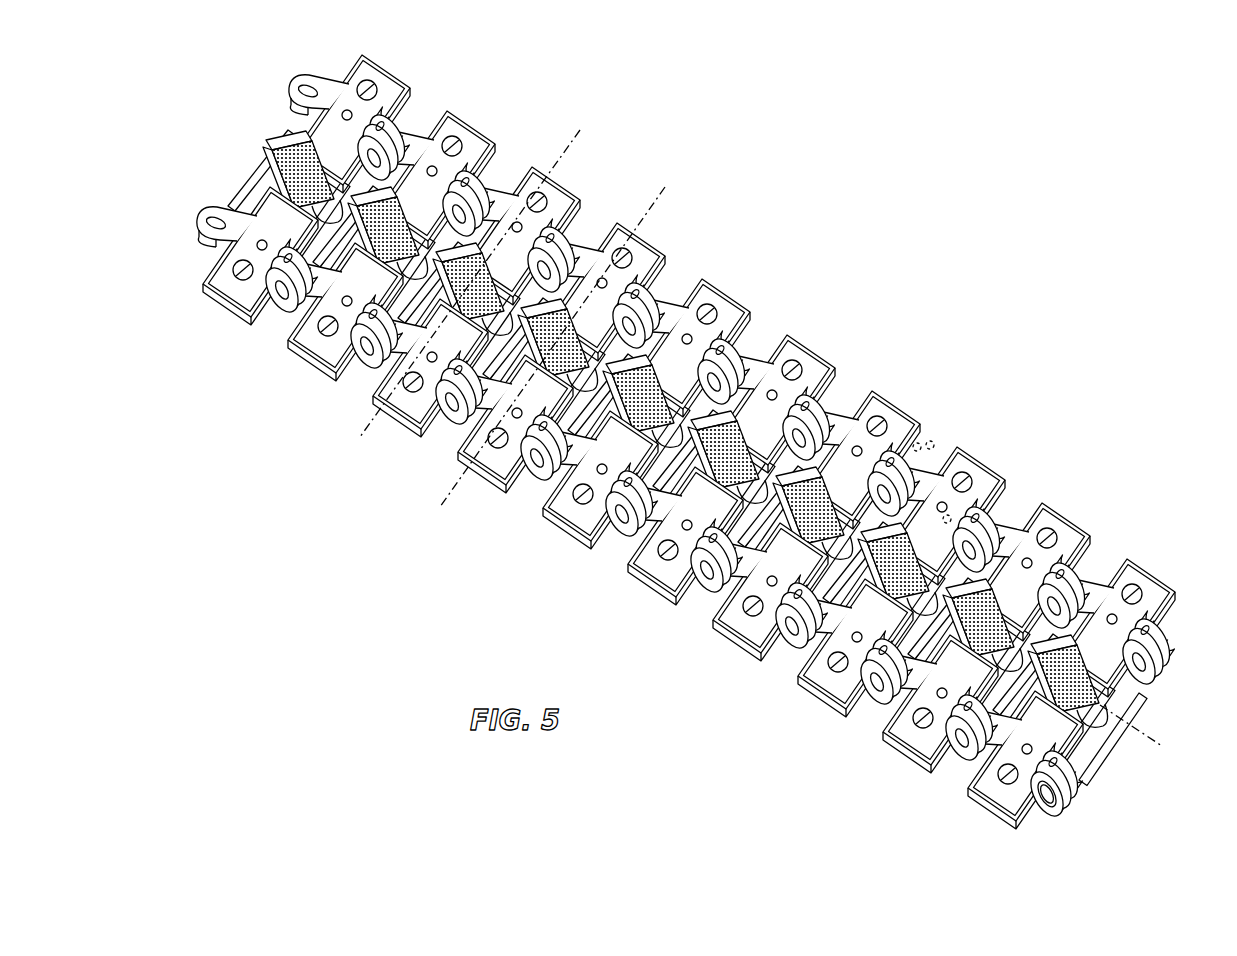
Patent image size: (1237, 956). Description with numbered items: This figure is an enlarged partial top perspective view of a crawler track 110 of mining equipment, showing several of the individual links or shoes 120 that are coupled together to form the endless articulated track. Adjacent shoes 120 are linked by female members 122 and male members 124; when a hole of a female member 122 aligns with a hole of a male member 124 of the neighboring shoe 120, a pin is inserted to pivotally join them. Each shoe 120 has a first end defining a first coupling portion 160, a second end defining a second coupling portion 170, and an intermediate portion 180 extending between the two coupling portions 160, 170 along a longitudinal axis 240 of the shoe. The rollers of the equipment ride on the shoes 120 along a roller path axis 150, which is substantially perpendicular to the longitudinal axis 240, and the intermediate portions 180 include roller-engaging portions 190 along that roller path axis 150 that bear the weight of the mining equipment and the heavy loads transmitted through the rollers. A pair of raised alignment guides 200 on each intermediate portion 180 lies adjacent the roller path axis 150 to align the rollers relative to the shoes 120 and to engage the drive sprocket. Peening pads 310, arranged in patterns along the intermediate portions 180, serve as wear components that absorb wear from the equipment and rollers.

The crawler track 110 is at (716, 444).
The shoe 120 is at (990, 467).
The female member 122 is at (845, 430).
The male member 124 is at (740, 352).
The roller path axis 150 is at (1135, 723).
The first coupling portion 160 is at (1000, 510).
The second coupling portion 170 is at (787, 637).
The intermediate portion 180 is at (1073, 781).
The roller-engaging portion 190 is at (947, 517).
The raised alignment guide 200 is at (660, 485).
The longitudinal axis 240 is at (568, 150).
The peening pad 310 is at (272, 160).